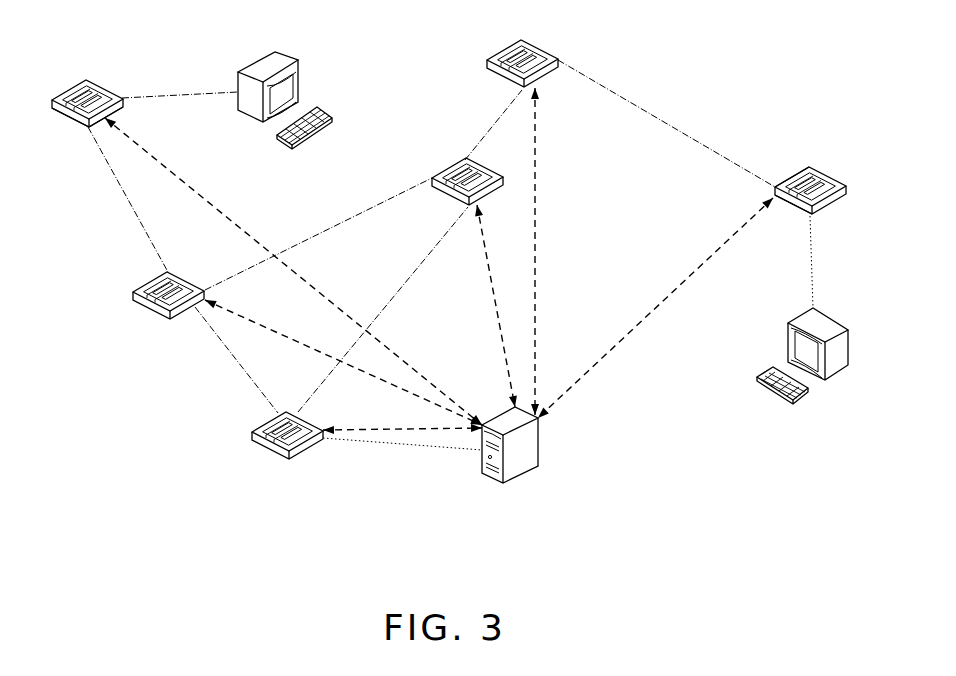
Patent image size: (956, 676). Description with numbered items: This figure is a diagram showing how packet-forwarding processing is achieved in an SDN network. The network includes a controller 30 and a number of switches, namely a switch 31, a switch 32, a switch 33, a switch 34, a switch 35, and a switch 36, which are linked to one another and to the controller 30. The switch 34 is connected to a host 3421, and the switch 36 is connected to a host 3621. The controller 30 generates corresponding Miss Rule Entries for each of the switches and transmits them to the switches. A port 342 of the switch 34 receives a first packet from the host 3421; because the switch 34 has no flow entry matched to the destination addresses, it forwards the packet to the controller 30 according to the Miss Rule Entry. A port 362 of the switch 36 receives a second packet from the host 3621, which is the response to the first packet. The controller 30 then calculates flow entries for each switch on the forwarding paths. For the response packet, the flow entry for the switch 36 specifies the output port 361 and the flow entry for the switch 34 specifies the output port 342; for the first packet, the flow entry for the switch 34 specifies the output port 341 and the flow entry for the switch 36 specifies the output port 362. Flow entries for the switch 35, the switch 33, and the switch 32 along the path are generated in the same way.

The controller 30 is at (538, 437).
The switch 31 is at (273, 450).
The switch 32 is at (135, 288).
The switch 33 is at (480, 203).
The switch 34 is at (76, 84).
The port 341 is at (70, 130).
The port 342 is at (123, 115).
The host 3421 is at (298, 58).
The switch 35 is at (508, 46).
The switch 36 is at (828, 207).
The port 361 is at (792, 167).
The port 362 is at (792, 216).
The host 3621 is at (798, 317).